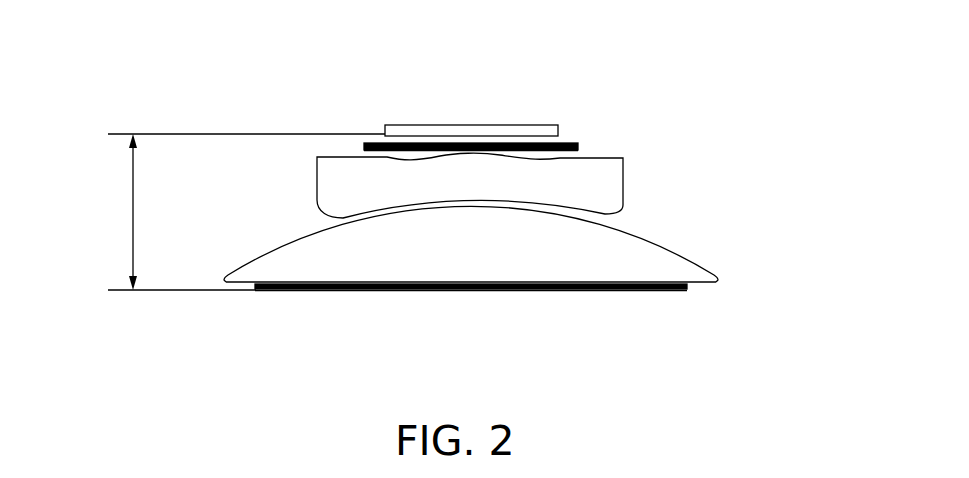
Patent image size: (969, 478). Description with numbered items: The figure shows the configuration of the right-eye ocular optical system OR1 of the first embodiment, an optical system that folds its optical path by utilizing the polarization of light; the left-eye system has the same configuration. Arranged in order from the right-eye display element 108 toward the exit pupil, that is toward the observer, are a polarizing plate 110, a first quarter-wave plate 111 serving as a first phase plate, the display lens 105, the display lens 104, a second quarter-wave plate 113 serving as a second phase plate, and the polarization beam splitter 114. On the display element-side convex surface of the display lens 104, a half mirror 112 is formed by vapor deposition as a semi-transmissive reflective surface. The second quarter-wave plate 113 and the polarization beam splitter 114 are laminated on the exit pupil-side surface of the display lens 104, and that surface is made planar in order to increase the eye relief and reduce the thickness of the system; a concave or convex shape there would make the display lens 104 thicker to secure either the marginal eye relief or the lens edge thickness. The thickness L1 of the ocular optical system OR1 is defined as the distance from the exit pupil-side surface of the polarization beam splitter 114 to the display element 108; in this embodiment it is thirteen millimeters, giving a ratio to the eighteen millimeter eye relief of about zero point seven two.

The display lens 104 is at (690, 273).
The display lens 105 is at (603, 173).
The right-eye display element 108 is at (545, 132).
The polarizing plate 110 is at (579, 143).
The first λ/4 plate 111 is at (580, 149).
The half mirror 112 is at (268, 254).
The second λ/4 plate 113 is at (268, 288).
The polarization beam splitter 114 is at (287, 291).
The thickness of the ocular optical system L1 is at (241, 212).
The right-eye ocular optical system OR1 is at (781, 155).